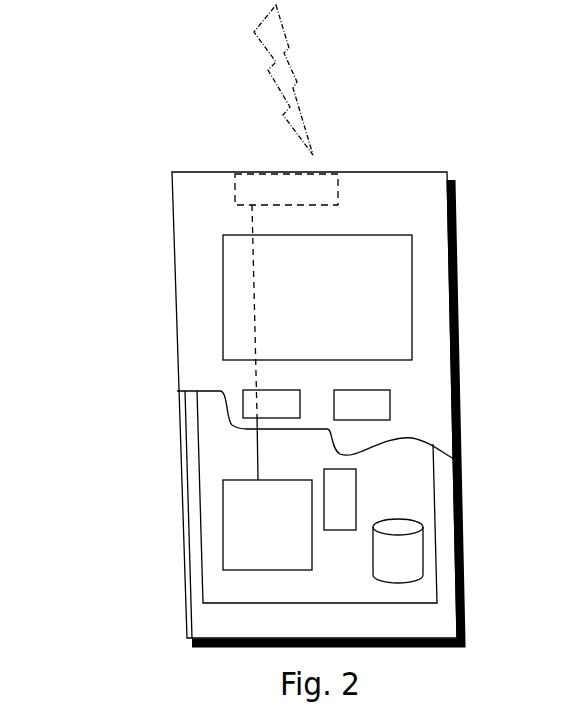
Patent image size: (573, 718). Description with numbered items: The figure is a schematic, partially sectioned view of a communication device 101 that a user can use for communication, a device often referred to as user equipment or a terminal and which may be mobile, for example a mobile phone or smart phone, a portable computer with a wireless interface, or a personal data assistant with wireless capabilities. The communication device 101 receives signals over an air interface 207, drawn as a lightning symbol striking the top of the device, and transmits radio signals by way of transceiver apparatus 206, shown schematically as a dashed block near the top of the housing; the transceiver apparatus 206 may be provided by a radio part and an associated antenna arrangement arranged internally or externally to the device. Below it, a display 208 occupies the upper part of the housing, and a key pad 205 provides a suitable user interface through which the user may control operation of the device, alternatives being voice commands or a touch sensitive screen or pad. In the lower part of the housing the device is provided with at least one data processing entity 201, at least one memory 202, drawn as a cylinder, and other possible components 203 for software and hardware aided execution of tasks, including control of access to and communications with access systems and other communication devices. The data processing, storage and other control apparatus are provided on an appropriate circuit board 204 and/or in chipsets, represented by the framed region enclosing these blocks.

The communication device 101 is at (172, 210).
The data processing entity 201 is at (230, 508).
The memory 202 is at (393, 563).
The other possible components 203 is at (337, 481).
The circuit board 204 is at (227, 587).
The key pad 205 is at (253, 405).
The transceiver apparatus 206 is at (337, 182).
The air interface 207 is at (316, 100).
The display 208 is at (239, 284).